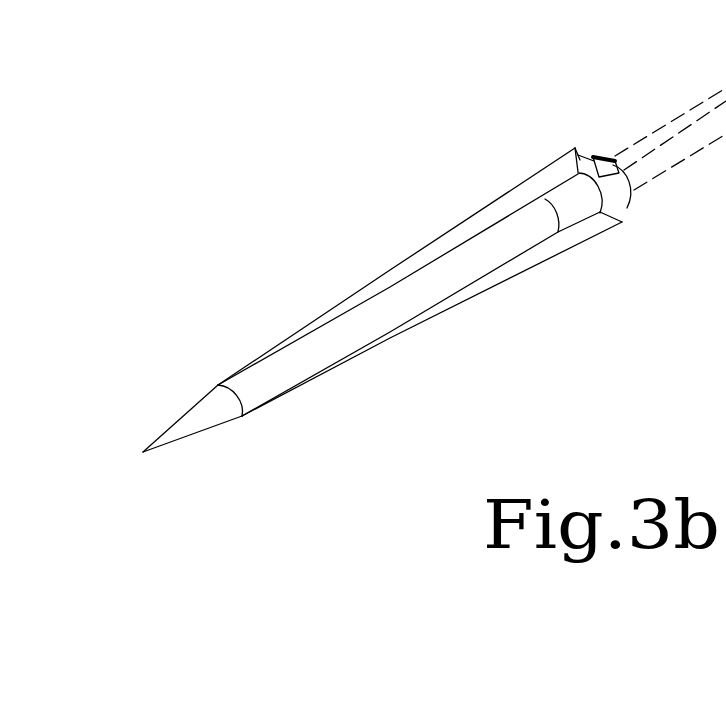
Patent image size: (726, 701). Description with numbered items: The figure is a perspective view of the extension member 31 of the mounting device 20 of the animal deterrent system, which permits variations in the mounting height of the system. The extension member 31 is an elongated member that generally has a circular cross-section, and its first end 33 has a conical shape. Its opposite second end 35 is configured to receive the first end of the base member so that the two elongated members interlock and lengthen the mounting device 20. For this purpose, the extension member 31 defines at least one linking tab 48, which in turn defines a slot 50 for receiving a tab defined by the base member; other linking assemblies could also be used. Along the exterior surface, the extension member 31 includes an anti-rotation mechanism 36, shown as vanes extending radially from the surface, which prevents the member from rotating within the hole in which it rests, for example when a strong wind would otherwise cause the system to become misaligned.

The mounting device 20 is at (434, 257).
The extension member 31 is at (280, 372).
The first end 33 is at (200, 417).
The second end 35 is at (614, 196).
The anti-rotation mechanism 36 is at (502, 212).
The linking tab 48 is at (597, 160).
The slot 50 is at (570, 151).